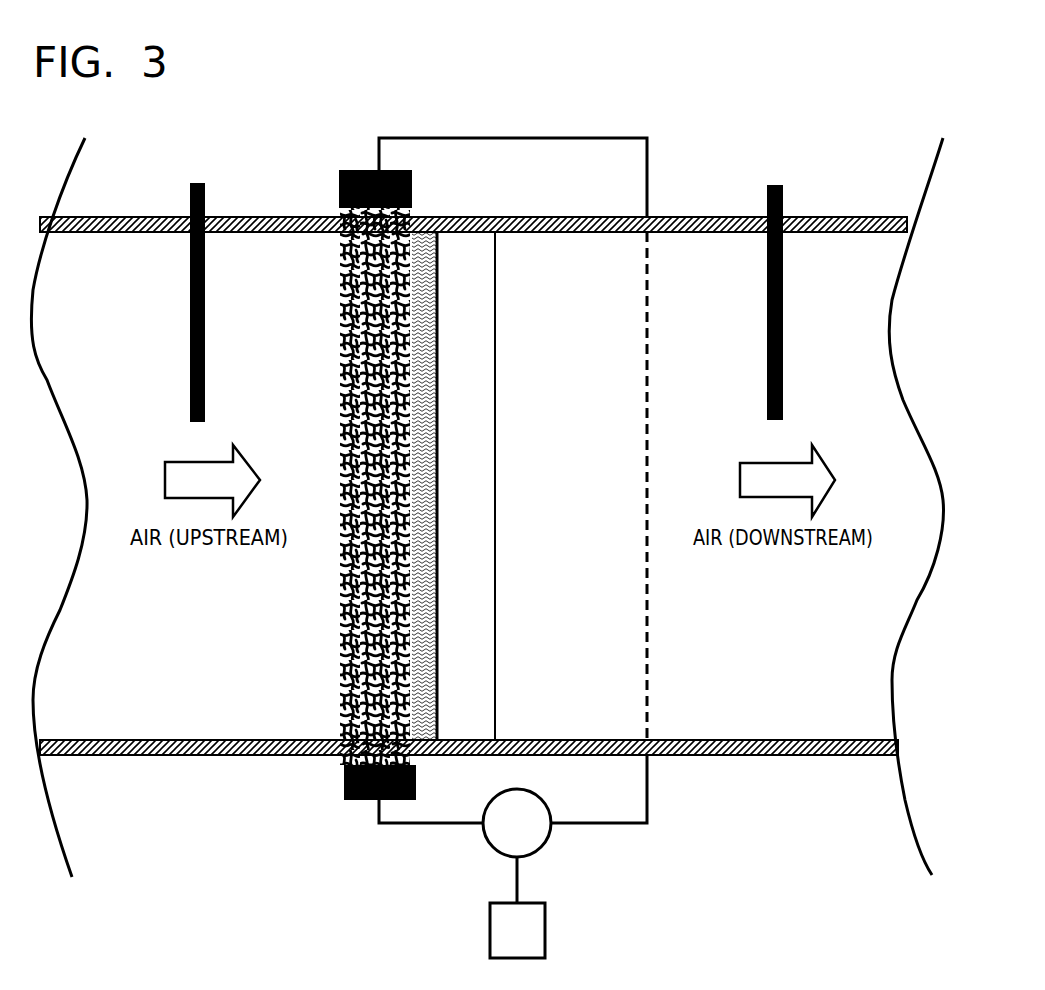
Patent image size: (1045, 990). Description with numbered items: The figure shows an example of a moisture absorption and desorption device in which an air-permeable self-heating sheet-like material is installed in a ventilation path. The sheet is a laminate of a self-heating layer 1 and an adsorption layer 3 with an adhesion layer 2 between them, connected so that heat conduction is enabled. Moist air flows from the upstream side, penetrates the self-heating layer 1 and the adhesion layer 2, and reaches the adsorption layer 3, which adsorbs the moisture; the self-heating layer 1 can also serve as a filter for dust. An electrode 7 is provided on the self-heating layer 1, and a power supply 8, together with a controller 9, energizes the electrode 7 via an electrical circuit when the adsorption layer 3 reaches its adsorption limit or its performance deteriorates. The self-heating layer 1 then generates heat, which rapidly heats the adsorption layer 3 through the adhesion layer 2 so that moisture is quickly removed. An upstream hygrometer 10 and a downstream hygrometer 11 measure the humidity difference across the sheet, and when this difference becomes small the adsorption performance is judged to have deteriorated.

The self-heating layer 1 is at (340, 425).
The adhesion layer 2 is at (437, 328).
The adsorption layer 3 is at (495, 457).
The electrode 7 is at (340, 168).
The power supply 8 is at (542, 835).
The controller 9 is at (490, 930).
The upstream hygrometer 10 is at (195, 183).
The downstream hygrometer 11 is at (772, 185).